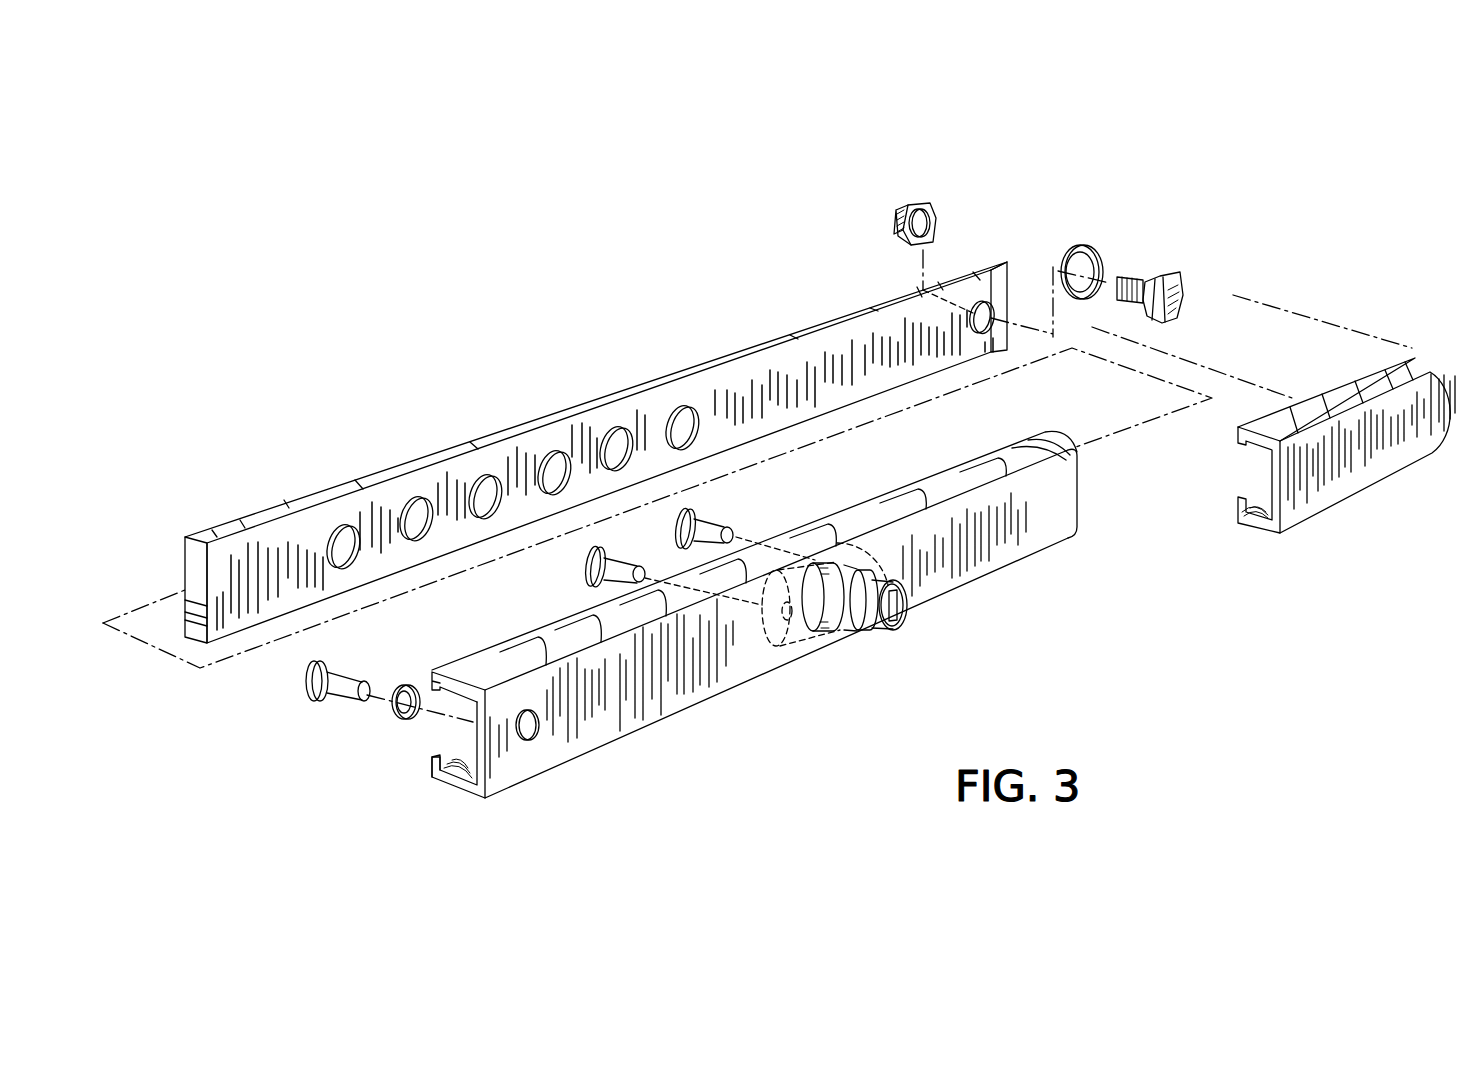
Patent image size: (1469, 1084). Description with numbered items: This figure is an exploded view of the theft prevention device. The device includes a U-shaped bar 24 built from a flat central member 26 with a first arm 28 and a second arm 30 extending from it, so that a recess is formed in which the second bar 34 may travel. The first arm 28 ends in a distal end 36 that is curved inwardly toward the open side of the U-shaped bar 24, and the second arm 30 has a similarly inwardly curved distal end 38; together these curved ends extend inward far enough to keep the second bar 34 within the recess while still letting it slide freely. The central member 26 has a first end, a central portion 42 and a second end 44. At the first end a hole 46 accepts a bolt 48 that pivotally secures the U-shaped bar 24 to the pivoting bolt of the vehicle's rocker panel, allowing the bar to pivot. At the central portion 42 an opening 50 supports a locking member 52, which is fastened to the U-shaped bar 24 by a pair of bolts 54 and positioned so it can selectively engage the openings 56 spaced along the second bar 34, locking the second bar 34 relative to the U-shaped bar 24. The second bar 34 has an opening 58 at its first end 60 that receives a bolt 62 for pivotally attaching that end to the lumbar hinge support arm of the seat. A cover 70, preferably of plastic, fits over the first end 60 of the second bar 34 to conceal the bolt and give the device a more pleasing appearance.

The U-shaped bar 24 is at (711, 630).
The flat central member 26 is at (612, 698).
The first arm 28 is at (987, 452).
The second arm 30 is at (450, 797).
The second bar 34 is at (697, 366).
The distal end of first arm 36 is at (432, 677).
The distal end of second arm 38 is at (430, 780).
The central portion 42 is at (867, 588).
The second end 44 is at (1057, 533).
The hole 46 is at (520, 745).
The bolt 48 is at (312, 672).
The opening 50 is at (832, 560).
The locking member 52 is at (847, 627).
The bolts 54 is at (707, 530).
The openings 56 is at (418, 497).
The opening 58 is at (981, 303).
The first end 60 is at (970, 265).
The bolt 62 is at (1178, 281).
The cover 70 is at (1435, 362).